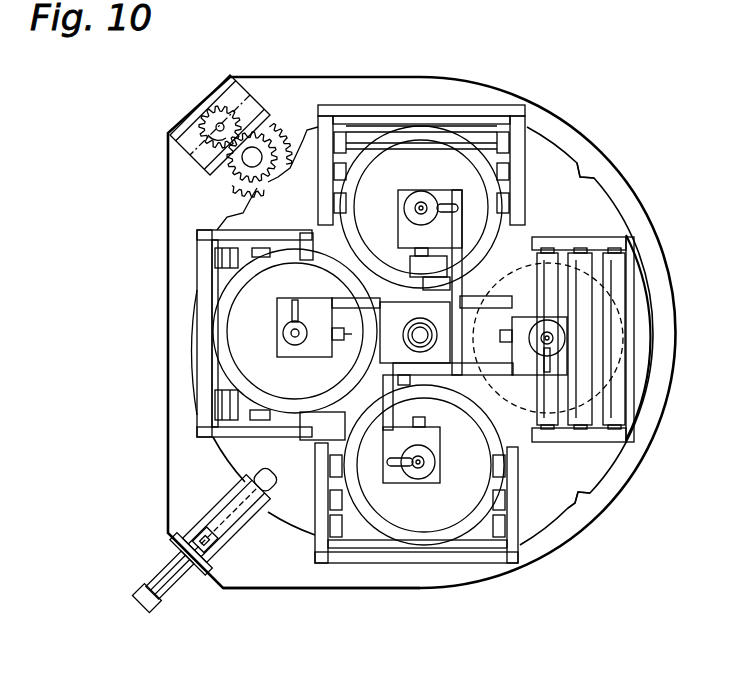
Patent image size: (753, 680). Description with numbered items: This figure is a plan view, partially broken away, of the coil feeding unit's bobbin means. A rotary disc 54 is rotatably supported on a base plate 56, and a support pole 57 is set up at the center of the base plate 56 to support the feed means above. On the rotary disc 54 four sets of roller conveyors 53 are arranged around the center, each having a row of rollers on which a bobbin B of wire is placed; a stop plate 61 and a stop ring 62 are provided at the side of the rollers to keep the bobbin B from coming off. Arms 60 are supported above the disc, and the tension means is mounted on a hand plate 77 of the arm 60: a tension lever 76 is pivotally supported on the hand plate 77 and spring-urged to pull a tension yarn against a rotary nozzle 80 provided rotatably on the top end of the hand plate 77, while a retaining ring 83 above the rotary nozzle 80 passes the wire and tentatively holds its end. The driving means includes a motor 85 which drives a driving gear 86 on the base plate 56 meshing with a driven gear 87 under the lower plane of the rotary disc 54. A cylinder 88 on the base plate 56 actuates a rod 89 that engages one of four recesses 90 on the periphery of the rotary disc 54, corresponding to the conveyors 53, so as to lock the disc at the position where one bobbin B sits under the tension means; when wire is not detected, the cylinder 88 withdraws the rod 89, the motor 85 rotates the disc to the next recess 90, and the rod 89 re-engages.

The roller conveyor 53 is at (224, 386).
The rotary disc 54 is at (583, 470).
The base plate 56 is at (285, 574).
The support pole 57 is at (526, 245).
The arms 60 is at (421, 208).
The stop plate 61 is at (197, 410).
The stop ring 62 is at (417, 245).
The tension lever 76 is at (418, 392).
The hand plate 77 is at (277, 310).
The rotary nozzle 80 is at (278, 332).
The retaining ring 83 is at (414, 474).
The motor 85 is at (200, 135).
The driving gear 86 is at (245, 180).
The driven gear 87 is at (297, 150).
The cylinder 88 is at (167, 580).
The rod 89 is at (248, 492).
The recesses 90 is at (578, 498).
The bobbin B is at (240, 350).